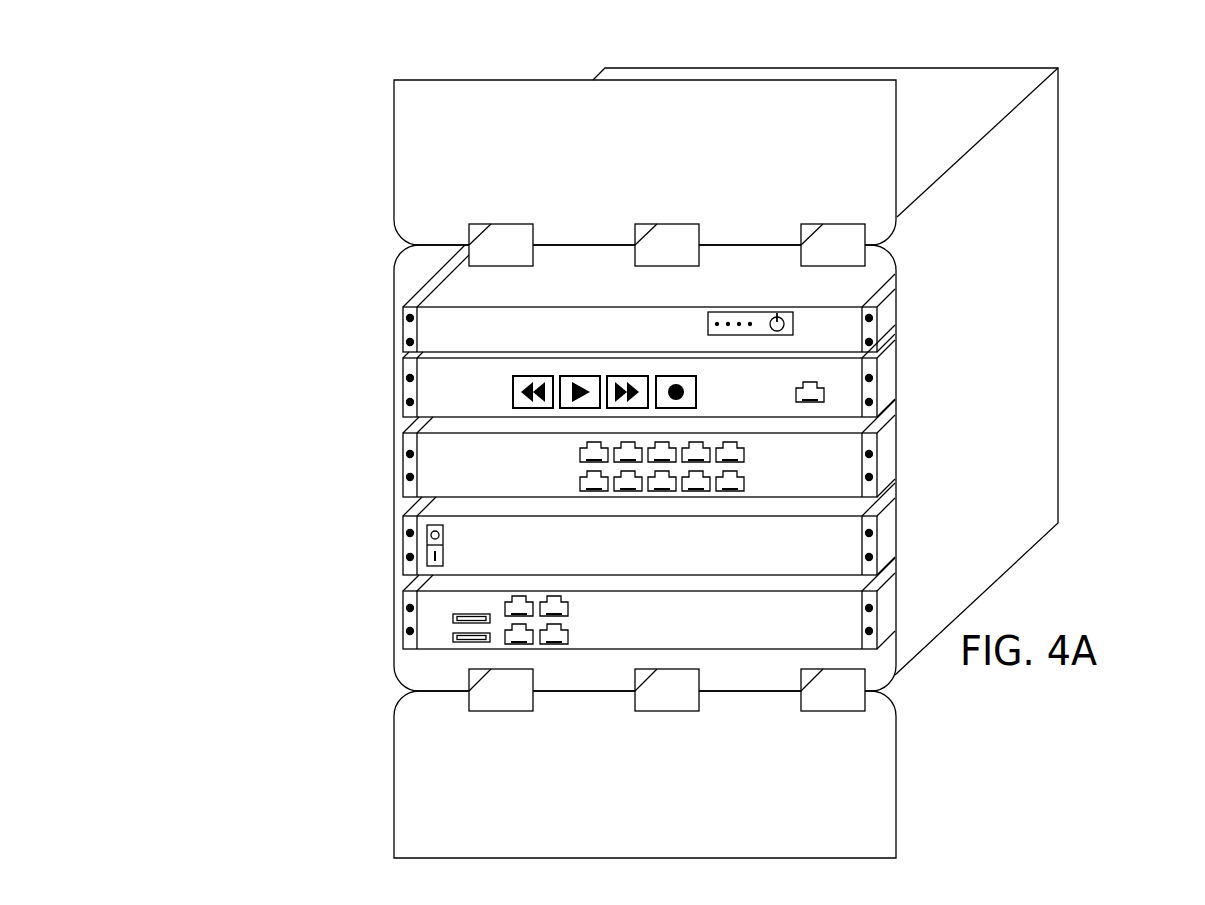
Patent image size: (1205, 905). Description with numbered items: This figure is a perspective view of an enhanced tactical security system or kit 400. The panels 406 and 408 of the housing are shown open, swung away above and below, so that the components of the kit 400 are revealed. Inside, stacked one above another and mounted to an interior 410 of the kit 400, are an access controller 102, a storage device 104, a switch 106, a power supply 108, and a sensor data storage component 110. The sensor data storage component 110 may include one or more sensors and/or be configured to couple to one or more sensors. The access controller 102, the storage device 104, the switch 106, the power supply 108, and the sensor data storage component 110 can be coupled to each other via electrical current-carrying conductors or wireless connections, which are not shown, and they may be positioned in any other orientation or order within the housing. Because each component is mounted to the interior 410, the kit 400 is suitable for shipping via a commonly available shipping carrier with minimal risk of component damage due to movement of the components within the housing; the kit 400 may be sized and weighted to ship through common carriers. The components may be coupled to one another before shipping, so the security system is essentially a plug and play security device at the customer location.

The enhanced tactical security system kit 400 is at (1140, 135).
The panel 406 is at (403, 143).
The panel 408 is at (405, 789).
The interior 410 is at (405, 265).
The access controller 102 is at (403, 330).
The storage device 104 is at (403, 388).
The switch 106 is at (403, 465).
The power supply 108 is at (403, 545).
The sensor data storage component 110 is at (403, 620).